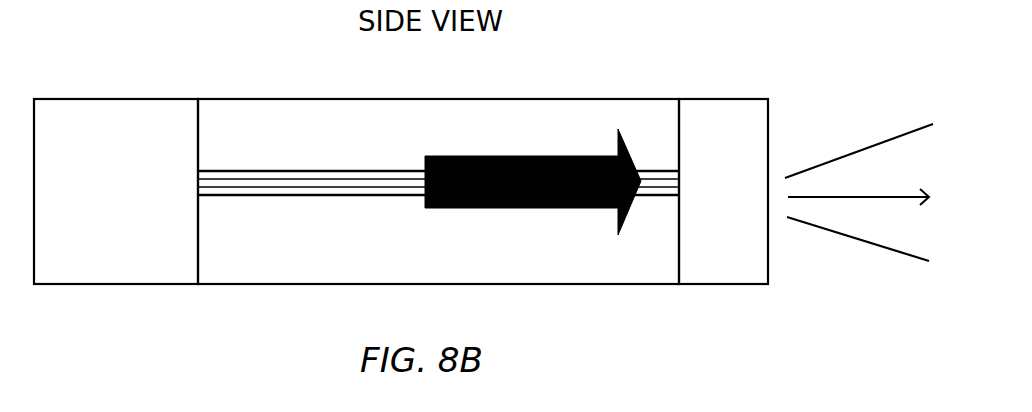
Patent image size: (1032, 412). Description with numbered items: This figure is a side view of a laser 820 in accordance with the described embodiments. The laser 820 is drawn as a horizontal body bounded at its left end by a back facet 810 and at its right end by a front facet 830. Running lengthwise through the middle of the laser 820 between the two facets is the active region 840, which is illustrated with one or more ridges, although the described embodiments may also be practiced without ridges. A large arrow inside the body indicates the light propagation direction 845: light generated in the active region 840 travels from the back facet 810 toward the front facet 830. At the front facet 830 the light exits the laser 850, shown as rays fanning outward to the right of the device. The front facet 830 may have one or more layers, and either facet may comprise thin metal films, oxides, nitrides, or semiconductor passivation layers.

The back facet 810 is at (115, 98).
The laser 820 is at (436, 99).
The front facet 830 is at (733, 100).
The active region 840 is at (364, 152).
The light propagation direction 845 is at (540, 155).
The light exiting the laser 850 is at (866, 96).